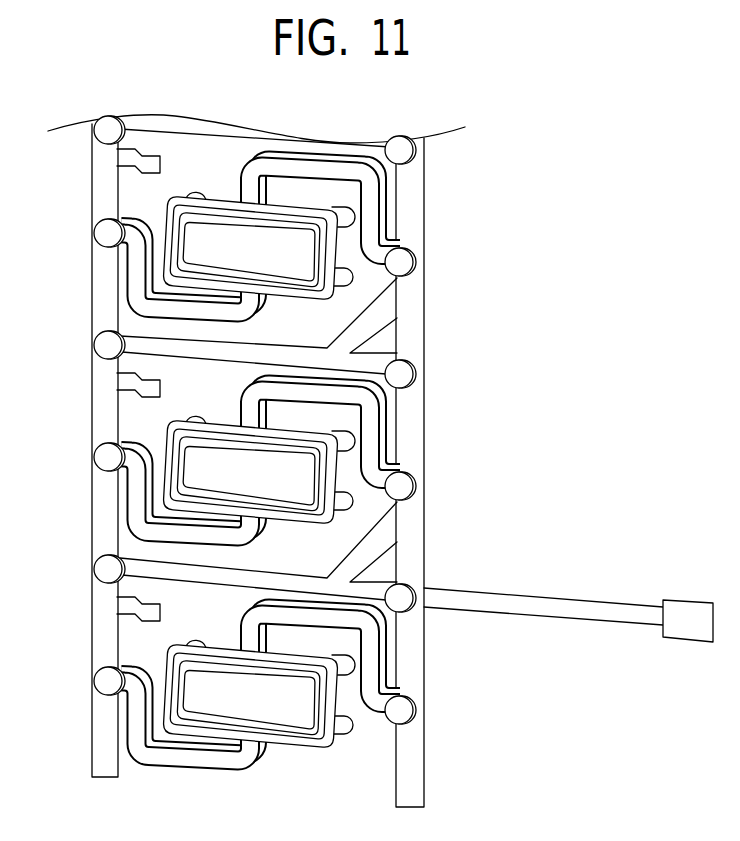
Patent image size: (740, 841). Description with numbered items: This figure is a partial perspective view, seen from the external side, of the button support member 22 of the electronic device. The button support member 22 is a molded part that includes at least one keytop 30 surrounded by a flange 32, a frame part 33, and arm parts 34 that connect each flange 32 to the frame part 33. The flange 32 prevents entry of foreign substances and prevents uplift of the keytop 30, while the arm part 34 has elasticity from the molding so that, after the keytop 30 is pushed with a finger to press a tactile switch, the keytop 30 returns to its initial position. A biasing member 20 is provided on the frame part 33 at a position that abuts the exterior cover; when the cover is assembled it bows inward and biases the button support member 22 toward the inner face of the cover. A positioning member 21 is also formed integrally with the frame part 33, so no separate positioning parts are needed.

The biasing member 20 is at (138, 160).
The positioning member 21 is at (576, 607).
The button support member 22 is at (567, 236).
The keytop 30 is at (285, 719).
The flange 32 is at (313, 744).
The frame part 33 is at (413, 661).
The arm part 34 is at (187, 763).